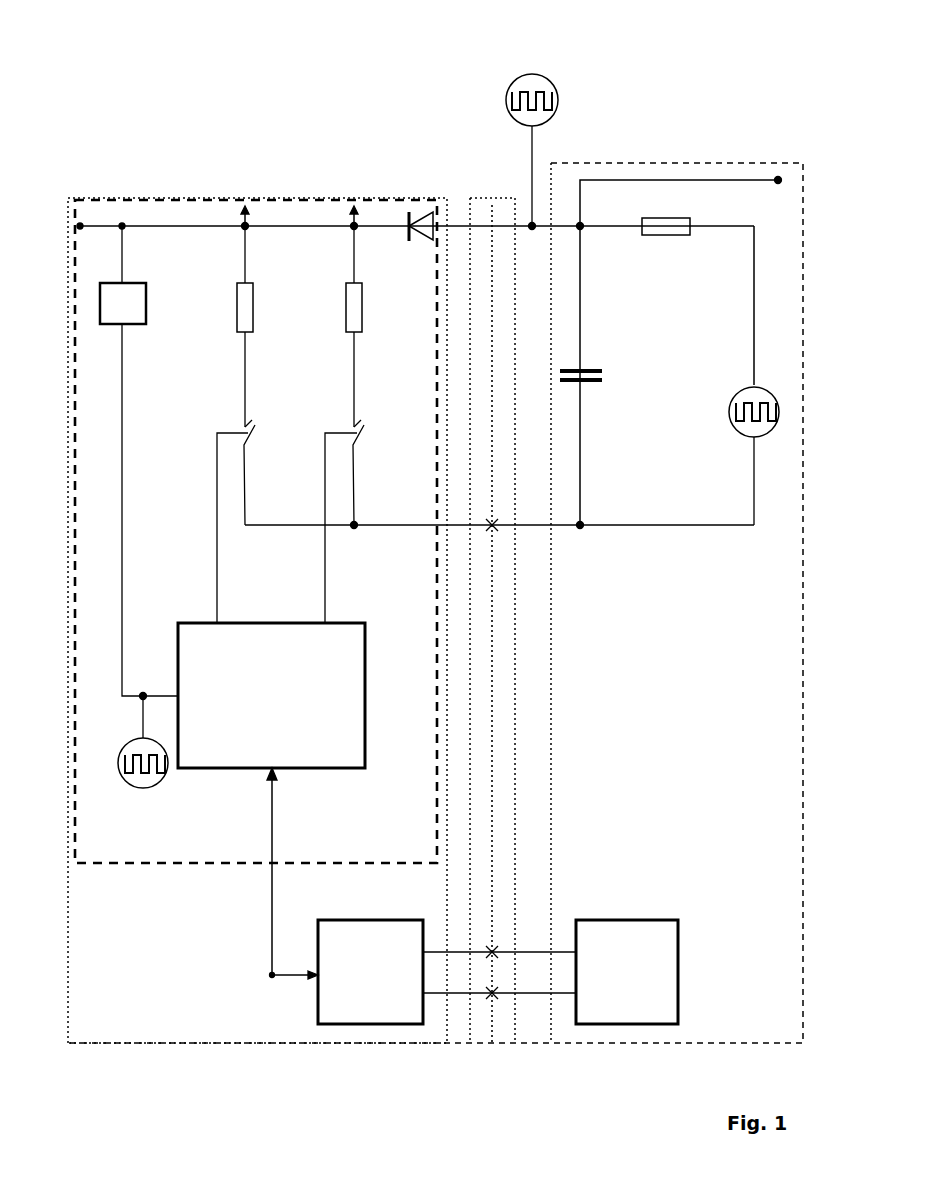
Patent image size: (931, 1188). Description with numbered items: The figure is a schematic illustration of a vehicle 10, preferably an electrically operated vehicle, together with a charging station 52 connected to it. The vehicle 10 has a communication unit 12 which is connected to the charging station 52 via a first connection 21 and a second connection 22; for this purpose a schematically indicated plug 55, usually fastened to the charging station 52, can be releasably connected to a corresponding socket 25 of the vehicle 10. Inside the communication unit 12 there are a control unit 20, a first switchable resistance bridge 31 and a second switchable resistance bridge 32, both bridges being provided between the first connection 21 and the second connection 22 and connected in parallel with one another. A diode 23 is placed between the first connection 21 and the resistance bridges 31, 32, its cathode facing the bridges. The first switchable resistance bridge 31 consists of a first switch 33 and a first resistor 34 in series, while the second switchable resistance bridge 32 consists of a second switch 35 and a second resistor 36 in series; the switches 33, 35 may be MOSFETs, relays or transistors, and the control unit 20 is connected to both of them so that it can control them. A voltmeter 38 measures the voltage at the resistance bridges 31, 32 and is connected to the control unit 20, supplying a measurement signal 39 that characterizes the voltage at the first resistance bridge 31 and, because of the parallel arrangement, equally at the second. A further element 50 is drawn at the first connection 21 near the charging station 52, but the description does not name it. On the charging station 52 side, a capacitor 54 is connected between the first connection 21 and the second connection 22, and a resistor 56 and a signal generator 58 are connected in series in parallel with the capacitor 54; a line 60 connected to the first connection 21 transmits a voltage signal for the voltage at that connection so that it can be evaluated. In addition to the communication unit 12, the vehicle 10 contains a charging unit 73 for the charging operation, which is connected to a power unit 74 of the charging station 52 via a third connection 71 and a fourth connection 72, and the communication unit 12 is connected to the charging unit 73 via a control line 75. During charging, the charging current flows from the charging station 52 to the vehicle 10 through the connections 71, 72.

The vehicle 10 is at (125, 198).
The communication unit 12 is at (328, 863).
The control unit 20 is at (228, 770).
The first connection 21 is at (492, 222).
The second connection 22 is at (496, 528).
The diode 23 is at (417, 208).
The socket 25 is at (470, 212).
The first switchable resistance bridge 31 is at (243, 208).
The second switchable resistance bridge 32 is at (352, 208).
The first switch 33 is at (256, 420).
The first resistor 34 is at (253, 310).
The second switch 35 is at (365, 420).
The second resistor 36 is at (362, 310).
The voltmeter 38 is at (146, 302).
The measurement signal 39 is at (143, 788).
The voltage sensor 50 is at (532, 74).
The charging station 52 is at (605, 163).
The capacitor 54 is at (602, 374).
The plug 55 is at (516, 1030).
The resistor 56 is at (666, 218).
The signal generator 58 is at (728, 412).
The line 60 is at (722, 180).
The third connection 71 is at (498, 946).
The fourth connection 72 is at (488, 1000).
The charging unit 73 is at (370, 1025).
The power unit 74 is at (627, 1025).
The control line 75 is at (265, 918).